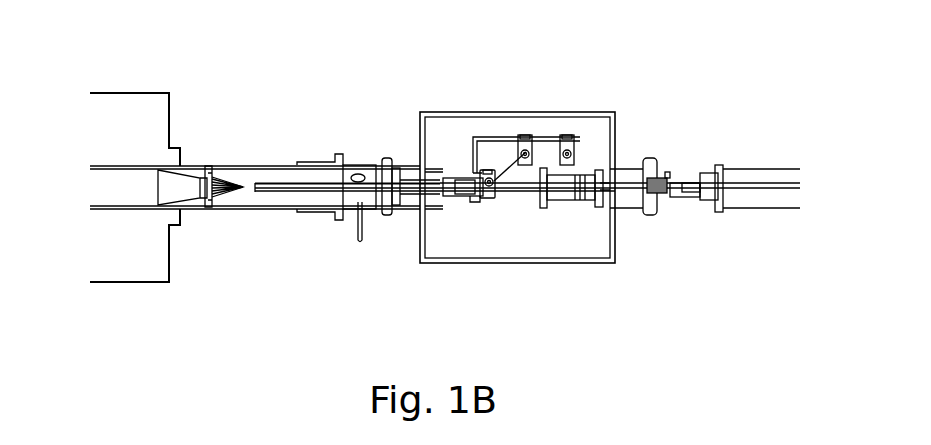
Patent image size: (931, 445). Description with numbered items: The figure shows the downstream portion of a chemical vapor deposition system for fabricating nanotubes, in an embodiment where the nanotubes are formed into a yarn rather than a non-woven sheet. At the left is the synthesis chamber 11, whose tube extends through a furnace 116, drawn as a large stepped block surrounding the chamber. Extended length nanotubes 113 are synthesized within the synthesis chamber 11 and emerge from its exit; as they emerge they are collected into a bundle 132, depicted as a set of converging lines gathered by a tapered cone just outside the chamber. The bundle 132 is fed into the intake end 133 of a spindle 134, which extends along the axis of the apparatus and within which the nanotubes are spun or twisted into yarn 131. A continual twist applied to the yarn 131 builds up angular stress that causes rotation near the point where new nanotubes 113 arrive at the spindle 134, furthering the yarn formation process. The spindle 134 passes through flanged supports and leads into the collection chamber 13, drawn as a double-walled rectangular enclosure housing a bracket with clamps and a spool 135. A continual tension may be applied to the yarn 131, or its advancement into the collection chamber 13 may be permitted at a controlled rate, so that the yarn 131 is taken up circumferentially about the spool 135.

The synthesis chamber 11 is at (186, 167).
The collection chamber 13 is at (498, 112).
The extended length nanotubes 113 is at (222, 178).
The furnace 116 is at (130, 92).
The yarn 131 is at (380, 187).
The bundle 132 is at (233, 188).
The intake end 133 is at (247, 190).
The spindle 134 is at (295, 182).
The spool 135 is at (540, 193).